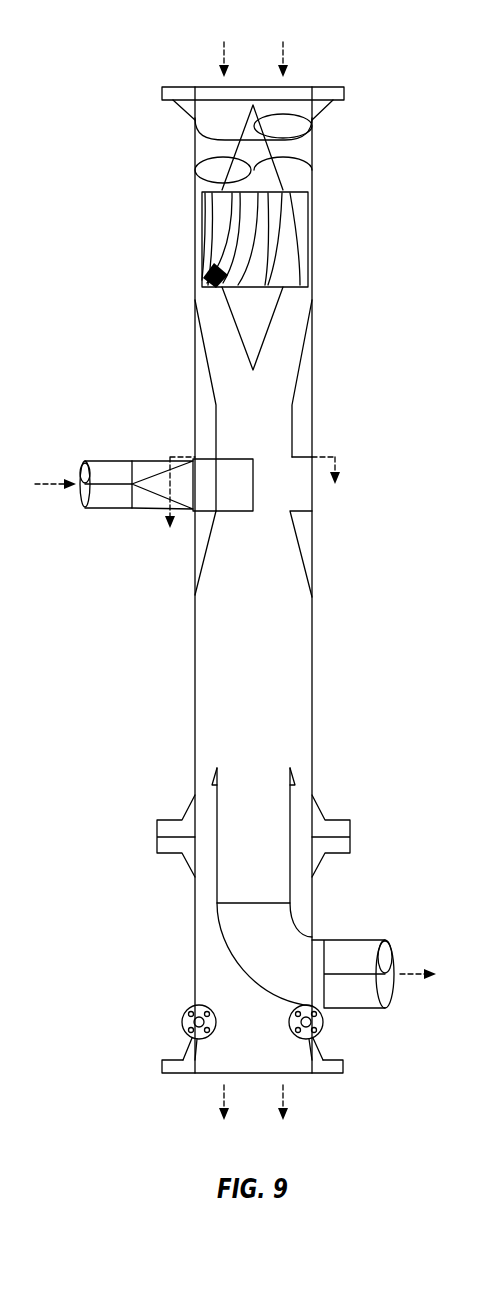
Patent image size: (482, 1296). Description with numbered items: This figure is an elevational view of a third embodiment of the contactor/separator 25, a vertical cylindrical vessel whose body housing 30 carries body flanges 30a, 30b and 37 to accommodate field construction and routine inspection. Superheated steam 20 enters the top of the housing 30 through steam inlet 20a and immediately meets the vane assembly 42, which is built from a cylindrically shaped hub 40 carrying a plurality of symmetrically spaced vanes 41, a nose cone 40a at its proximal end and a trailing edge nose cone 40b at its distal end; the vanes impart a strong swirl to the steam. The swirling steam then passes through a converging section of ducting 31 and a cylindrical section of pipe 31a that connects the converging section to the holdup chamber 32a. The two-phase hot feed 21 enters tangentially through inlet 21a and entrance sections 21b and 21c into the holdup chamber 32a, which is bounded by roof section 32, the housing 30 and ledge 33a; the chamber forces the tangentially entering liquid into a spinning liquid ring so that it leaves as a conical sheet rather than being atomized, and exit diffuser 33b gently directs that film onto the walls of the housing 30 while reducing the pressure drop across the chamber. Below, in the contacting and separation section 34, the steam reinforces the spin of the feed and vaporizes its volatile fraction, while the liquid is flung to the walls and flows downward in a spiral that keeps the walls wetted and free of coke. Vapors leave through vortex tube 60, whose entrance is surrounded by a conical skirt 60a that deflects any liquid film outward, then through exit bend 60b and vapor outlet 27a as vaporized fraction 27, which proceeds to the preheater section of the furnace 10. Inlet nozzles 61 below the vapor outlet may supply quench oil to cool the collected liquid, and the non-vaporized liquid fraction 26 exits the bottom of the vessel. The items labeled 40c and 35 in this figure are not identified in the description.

The contactor/separator 25 is at (136, 45).
The superheated steam 20 is at (283, 52).
The body flange 30a is at (335, 87).
The body housing 30 is at (312, 355).
The steam inlet 20a is at (200, 109).
The nose cone 40a is at (296, 136).
The hub 40 is at (263, 212).
The vanes 41 is at (292, 238).
The vane assembly lower edge 40c is at (226, 268).
The trailing edge nose cone 40b is at (268, 312).
The vane assembly 42 is at (353, 100).
The converging section of ducting 31 is at (302, 380).
The cylindrical section of pipe 31a is at (292, 428).
The roof section 32 is at (303, 455).
The furnace 10 is at (253, 510).
The two-phase hot feed 21 is at (58, 480).
The tangentially affixed inlet 21a is at (110, 460).
The entrance section 21b is at (157, 460).
The entrance section 21c is at (200, 475).
The holdup chamber 32a is at (302, 488).
The ledge 33a is at (207, 518).
The exit diffuser 33b is at (197, 568).
The contacting and separation section 34 is at (353, 510).
The conical skirt 60a is at (211, 776).
The vortex tube 60 is at (292, 800).
The body flange 37 is at (335, 820).
The lower separation section 35 is at (140, 770).
The exit bend 60b is at (222, 938).
The vapor outlet 27a is at (353, 940).
The vaporized fraction 27 is at (413, 978).
The inlet nozzles 61 is at (324, 1022).
The body flange 30b is at (345, 1067).
The liquid fraction 26 is at (283, 1097).